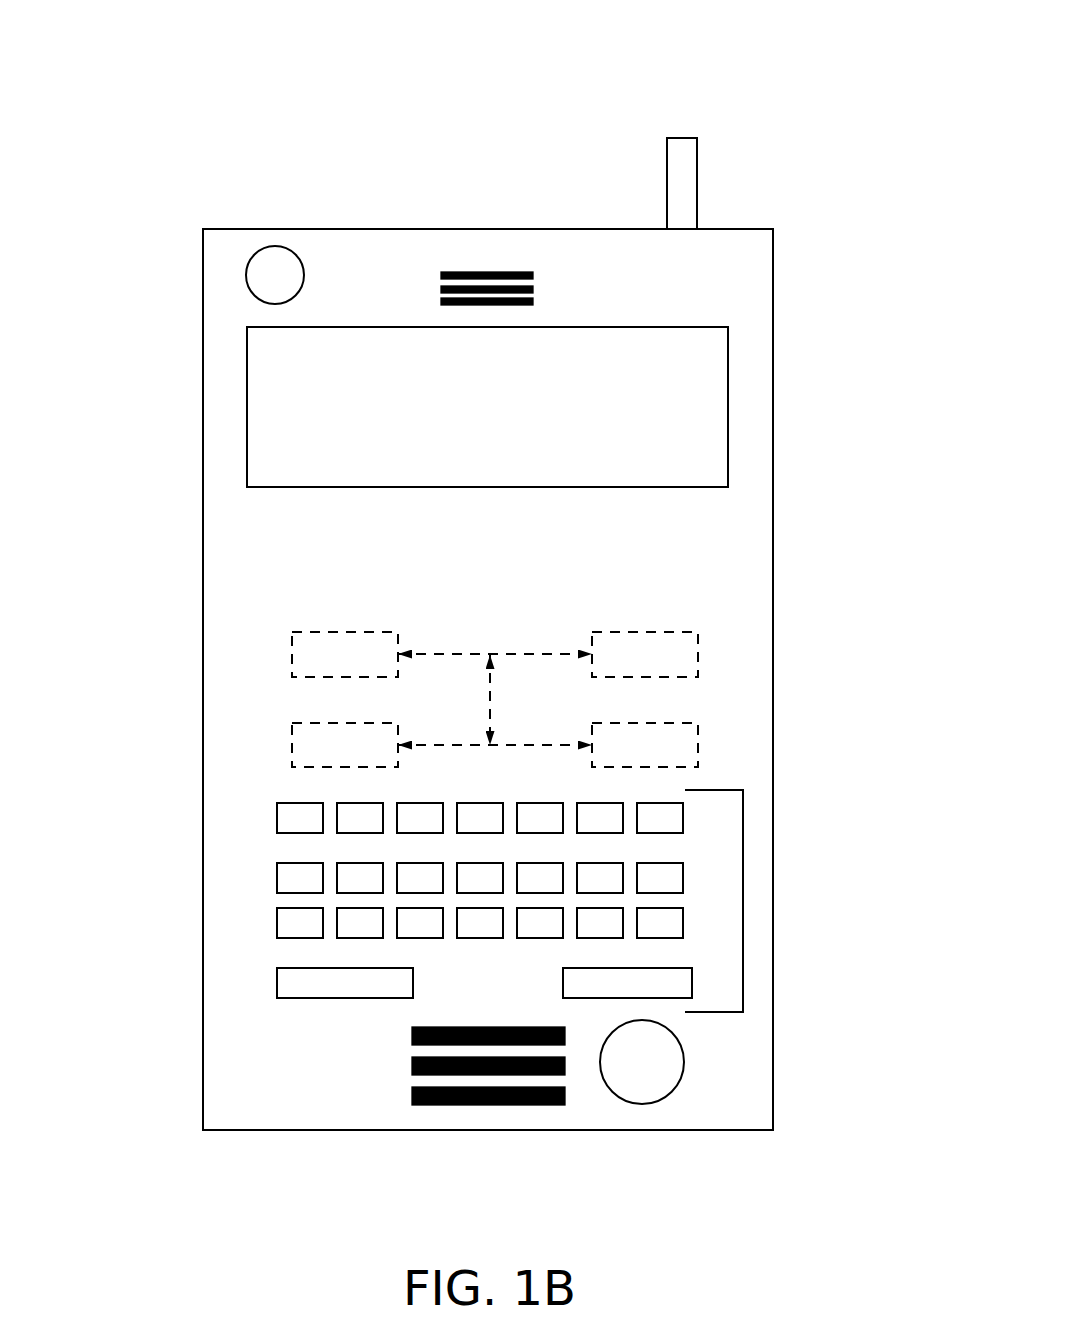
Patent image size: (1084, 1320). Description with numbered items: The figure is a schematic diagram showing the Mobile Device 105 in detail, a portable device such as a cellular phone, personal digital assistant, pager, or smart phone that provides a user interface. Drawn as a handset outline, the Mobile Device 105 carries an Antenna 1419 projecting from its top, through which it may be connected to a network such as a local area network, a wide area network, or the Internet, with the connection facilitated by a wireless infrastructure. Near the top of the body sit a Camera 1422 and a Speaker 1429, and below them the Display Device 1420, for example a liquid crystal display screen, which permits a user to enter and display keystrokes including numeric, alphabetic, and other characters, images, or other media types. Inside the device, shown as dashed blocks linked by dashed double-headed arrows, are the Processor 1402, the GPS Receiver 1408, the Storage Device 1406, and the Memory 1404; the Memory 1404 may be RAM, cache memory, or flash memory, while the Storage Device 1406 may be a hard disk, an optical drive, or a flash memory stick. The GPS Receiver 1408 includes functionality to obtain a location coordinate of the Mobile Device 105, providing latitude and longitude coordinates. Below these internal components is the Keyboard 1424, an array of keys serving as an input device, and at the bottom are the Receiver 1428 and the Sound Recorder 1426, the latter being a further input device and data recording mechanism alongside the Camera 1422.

The mobile device 105 is at (560, 80).
The antenna 1419 is at (683, 182).
The camera 1422 is at (247, 272).
The speaker 1429 is at (487, 272).
The display device 1420 is at (705, 410).
The processor 1402 is at (292, 655).
The GPS receiver 1408 is at (700, 652).
The storage device 1406 is at (292, 745).
The memory 1404 is at (700, 745).
The keyboard 1424 is at (748, 890).
The receiver 1428 is at (487, 1105).
The sound recorder 1426 is at (645, 1060).